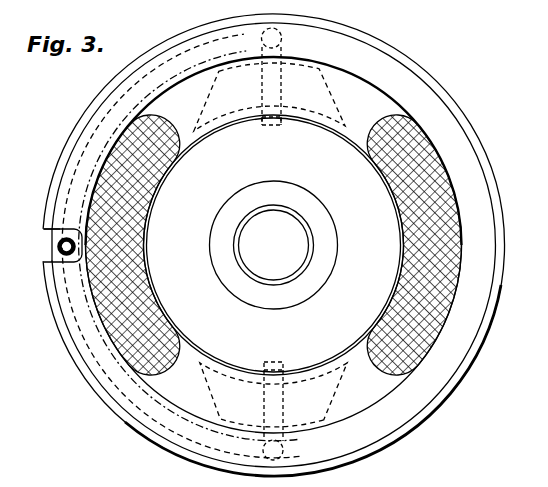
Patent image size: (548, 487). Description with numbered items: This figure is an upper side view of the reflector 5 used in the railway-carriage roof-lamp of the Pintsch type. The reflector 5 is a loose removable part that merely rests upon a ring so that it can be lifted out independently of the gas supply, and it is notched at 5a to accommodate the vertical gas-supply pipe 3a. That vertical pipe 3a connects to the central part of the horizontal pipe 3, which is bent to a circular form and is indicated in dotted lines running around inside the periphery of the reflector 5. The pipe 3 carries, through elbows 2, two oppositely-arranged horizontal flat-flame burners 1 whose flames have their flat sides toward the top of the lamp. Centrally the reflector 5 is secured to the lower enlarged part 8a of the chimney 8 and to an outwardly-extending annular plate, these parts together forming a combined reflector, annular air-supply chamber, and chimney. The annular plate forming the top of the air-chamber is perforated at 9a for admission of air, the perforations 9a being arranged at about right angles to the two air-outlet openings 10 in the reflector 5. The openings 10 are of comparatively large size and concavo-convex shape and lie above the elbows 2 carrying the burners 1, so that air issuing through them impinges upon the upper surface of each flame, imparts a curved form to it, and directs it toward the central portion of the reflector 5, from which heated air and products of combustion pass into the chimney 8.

The flat-flame burner 1 is at (274, 245).
The elbow 2 is at (283, 452).
The horizontal pipe 3 is at (58, 237).
The vertical gas-supply pipe 3a is at (56, 256).
The reflector 5 is at (275, 245).
The notch 5a is at (45, 230).
The chimney 8 is at (274, 245).
The lower enlarged part of the chimney 8a is at (285, 258).
The perforations 9a is at (128, 254).
The air-outlet opening 10 is at (270, 245).